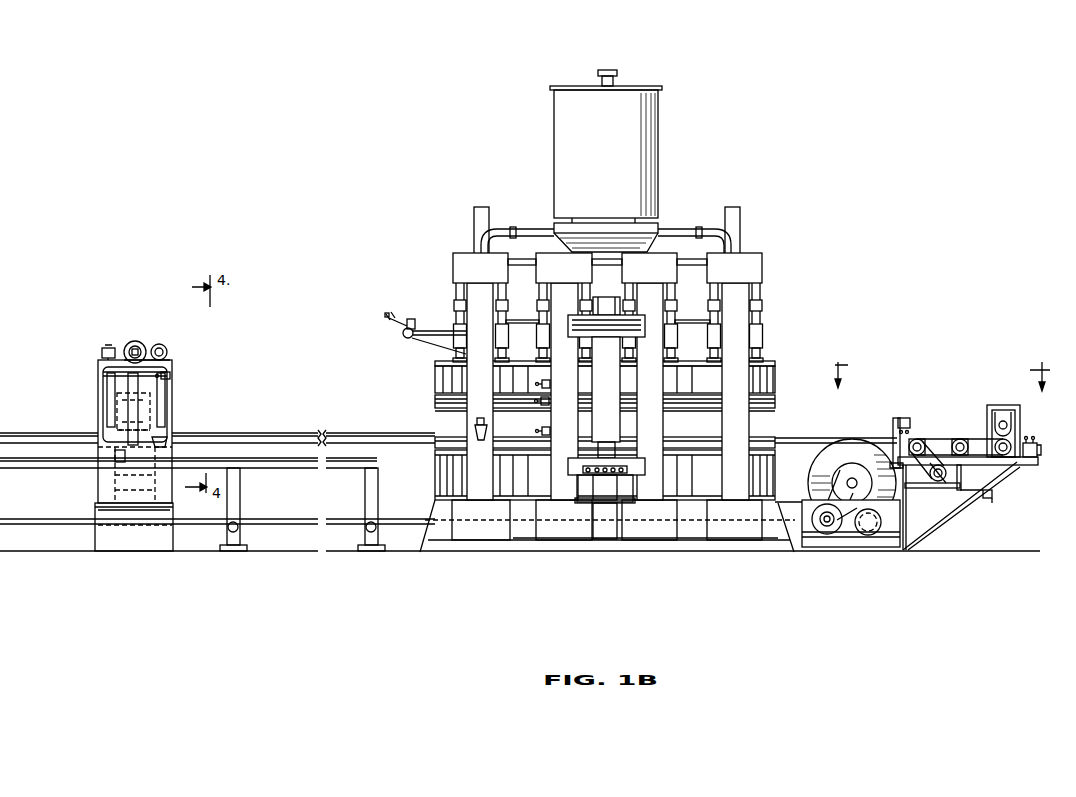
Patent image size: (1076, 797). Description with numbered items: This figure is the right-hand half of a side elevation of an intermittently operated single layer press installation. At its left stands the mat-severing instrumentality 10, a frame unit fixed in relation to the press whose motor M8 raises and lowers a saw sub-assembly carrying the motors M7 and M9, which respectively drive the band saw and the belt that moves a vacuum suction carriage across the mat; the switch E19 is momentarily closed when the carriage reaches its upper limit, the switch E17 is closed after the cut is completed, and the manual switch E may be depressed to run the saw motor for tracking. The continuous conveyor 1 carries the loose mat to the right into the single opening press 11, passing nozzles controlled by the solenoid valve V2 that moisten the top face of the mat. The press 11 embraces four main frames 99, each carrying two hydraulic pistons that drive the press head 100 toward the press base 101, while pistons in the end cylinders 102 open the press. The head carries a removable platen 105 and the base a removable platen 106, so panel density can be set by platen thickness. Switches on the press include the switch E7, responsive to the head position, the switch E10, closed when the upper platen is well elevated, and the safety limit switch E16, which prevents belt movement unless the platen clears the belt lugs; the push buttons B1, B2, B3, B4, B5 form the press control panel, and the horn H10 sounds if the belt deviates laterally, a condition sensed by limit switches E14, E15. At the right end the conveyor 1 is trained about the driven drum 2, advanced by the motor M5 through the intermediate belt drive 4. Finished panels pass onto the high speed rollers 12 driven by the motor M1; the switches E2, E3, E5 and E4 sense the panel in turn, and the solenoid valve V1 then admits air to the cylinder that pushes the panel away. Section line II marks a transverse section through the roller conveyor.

The mat-severing instrumentality 10 is at (188, 435).
The motor M9 is at (107, 347).
The motor M8 is at (172, 333).
The switch E19 is at (171, 375).
The motor M7 is at (168, 405).
The switch E17 is at (171, 442).
The manual switch E is at (113, 459).
The single opening press 11 is at (641, 325).
The end cylinders 102 is at (482, 212).
The main frames 99 is at (458, 274).
The press head 100 is at (775, 383).
The platen 105 is at (775, 411).
The platen 106 is at (775, 445).
The press base 101 is at (442, 462).
The continuous conveyor 1 is at (782, 553).
The push button B1 is at (588, 474).
The push button B2 is at (597, 474).
The push button B3 is at (605, 474).
The push button B4 is at (613, 474).
The push button B5 is at (621, 474).
The solenoid valve V2 is at (416, 324).
The horn H10 is at (490, 404).
The switch E7 is at (553, 383).
The switch E10 is at (547, 405).
The safety limit switch E16 is at (553, 432).
The driven drum 2 is at (822, 473).
The intermediate belt drive 4 is at (843, 522).
The motor M5 is at (869, 548).
The section line II- II is at (942, 373).
The high speed rollers 12 is at (969, 471).
The switch E2 is at (897, 418).
The switch E3 is at (911, 420).
The switch E5 is at (1028, 458).
The switch E4 is at (1040, 450).
The motor M1 is at (947, 483).
The limit switch E14 is at (932, 488).
The limit switch E15 is at (933, 477).
The solenoid valve V1 is at (993, 499).